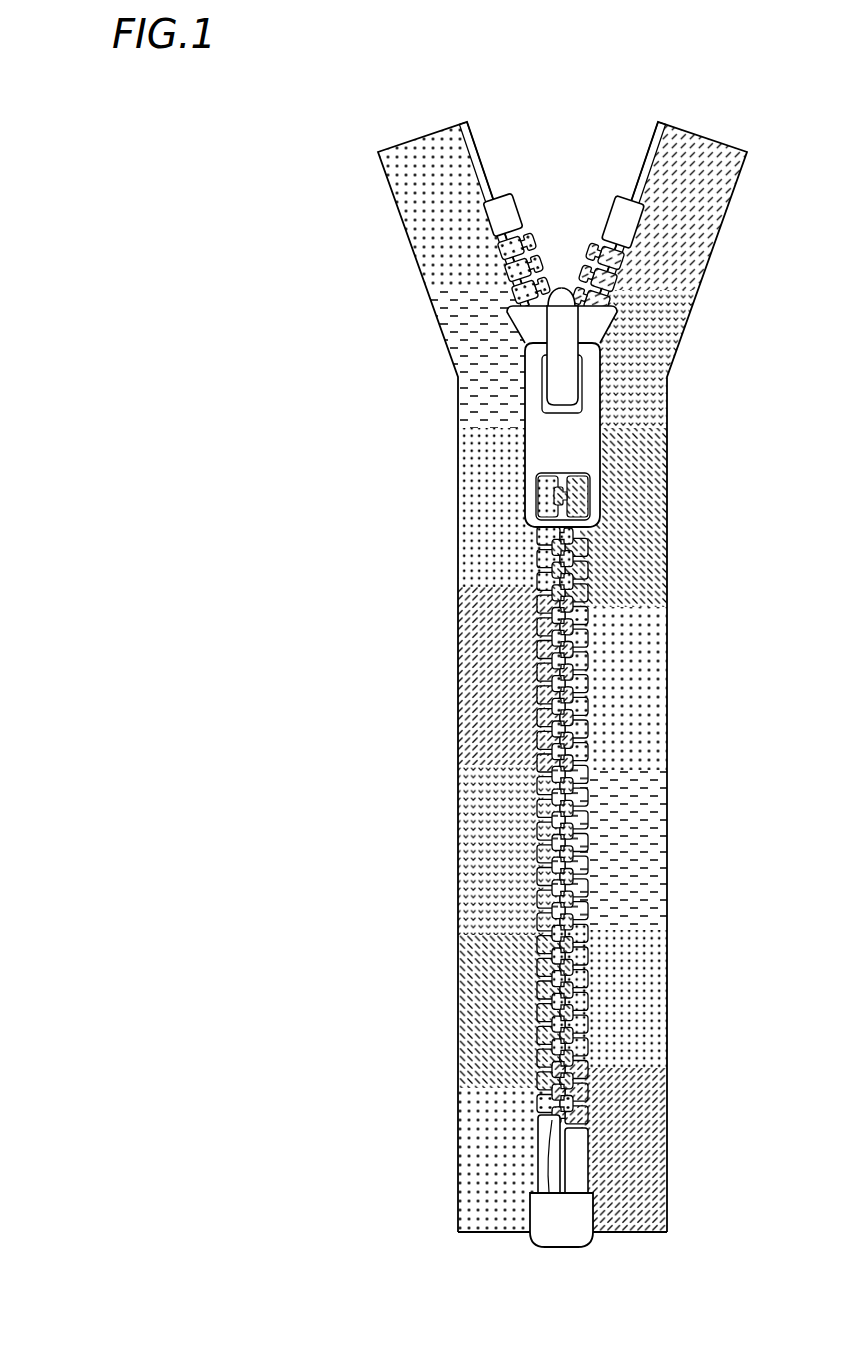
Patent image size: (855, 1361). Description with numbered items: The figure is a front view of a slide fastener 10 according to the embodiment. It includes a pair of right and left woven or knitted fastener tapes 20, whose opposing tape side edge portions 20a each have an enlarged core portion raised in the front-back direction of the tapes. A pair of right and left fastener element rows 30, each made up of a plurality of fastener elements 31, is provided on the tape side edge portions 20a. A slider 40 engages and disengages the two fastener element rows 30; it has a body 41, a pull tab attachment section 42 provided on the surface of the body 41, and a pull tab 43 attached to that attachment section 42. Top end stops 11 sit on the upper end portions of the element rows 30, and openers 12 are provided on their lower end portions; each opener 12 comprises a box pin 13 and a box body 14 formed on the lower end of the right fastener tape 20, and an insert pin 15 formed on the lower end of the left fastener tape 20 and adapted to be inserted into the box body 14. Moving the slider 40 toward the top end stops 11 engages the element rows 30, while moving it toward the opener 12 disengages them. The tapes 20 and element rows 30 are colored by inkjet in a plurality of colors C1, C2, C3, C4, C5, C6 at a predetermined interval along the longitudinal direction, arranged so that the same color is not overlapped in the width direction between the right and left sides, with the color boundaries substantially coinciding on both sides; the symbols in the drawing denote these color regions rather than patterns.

The slide fastener 10 is at (562, 639).
The fastener tape 20 is at (562, 660).
The tape side edge portion 20a is at (480, 160).
The top end stop 11 is at (498, 218).
The fastener element row 30 is at (563, 678).
The fastener element 31 is at (548, 601).
The slider 40 is at (564, 368).
The body 41 is at (588, 325).
The pull tab attachment section 42 is at (540, 325).
The pull tab 43 is at (562, 440).
The opener 12 is at (563, 1181).
The box pin 13 is at (576, 1168).
The box body 14 is at (580, 1214).
The insert pin 15 is at (550, 1168).
The first color C1 is at (490, 682).
The second color C2 is at (490, 842).
The third color C3 is at (490, 995).
The fourth color C4 is at (430, 176).
The fifth color C5 is at (490, 378).
The sixth color C6 is at (490, 496).